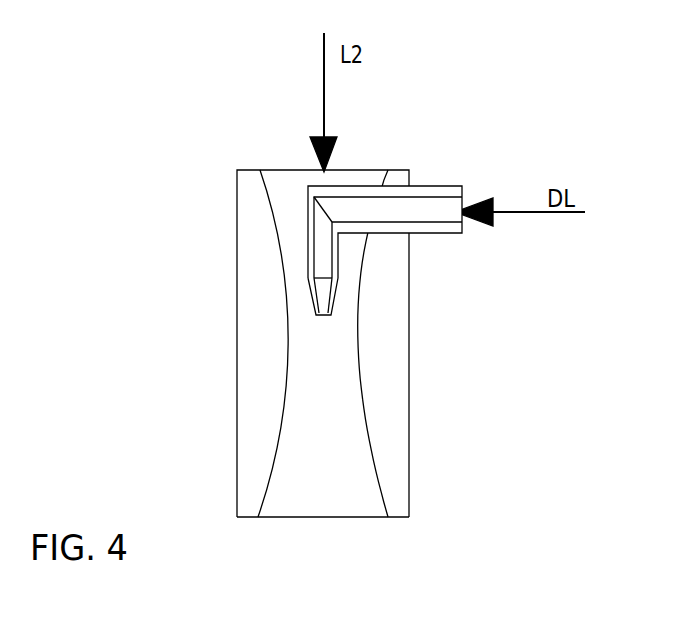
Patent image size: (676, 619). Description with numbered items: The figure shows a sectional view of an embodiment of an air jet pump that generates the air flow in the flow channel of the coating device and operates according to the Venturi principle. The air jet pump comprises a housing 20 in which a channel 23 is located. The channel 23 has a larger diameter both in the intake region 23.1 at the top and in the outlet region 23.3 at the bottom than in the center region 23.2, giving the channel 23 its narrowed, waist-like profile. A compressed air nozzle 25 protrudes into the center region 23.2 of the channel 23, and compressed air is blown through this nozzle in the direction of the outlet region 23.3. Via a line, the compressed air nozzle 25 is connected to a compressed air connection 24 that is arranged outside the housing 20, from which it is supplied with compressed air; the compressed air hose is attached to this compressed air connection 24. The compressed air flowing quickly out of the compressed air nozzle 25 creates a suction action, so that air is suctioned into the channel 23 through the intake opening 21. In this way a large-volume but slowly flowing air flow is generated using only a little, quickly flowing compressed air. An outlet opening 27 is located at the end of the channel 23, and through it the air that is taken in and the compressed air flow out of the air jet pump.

The housing 20 is at (321, 335).
The intake opening 21 is at (282, 170).
The channel 23 is at (406, 335).
The intake region 23.1 is at (347, 178).
The center region 23.2 is at (340, 367).
The outlet region 23.3 is at (333, 493).
The compressed air connection 24 is at (340, 244).
The compressed air nozzle 25 is at (315, 315).
The outlet opening 27 is at (288, 517).